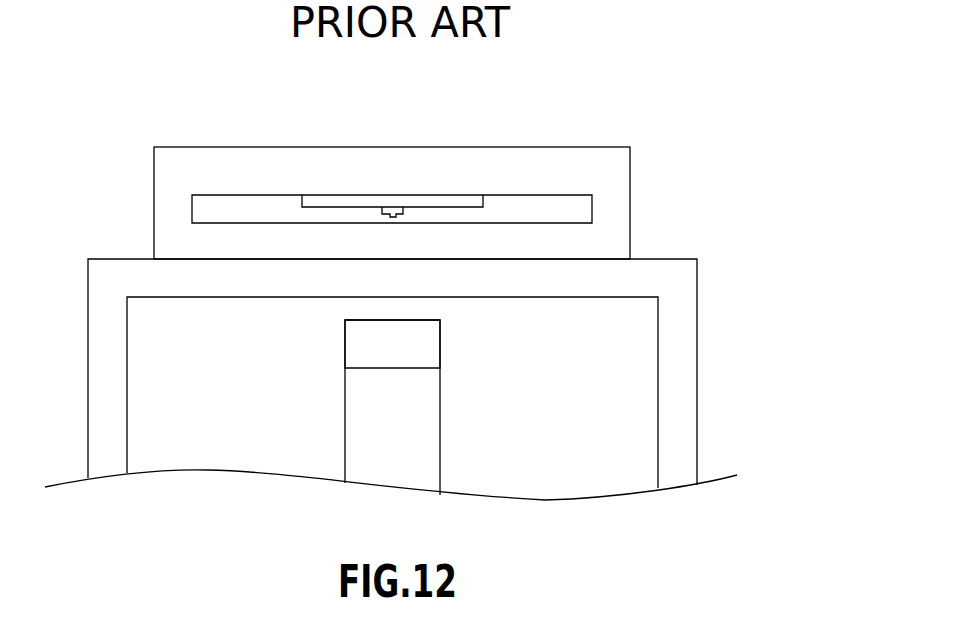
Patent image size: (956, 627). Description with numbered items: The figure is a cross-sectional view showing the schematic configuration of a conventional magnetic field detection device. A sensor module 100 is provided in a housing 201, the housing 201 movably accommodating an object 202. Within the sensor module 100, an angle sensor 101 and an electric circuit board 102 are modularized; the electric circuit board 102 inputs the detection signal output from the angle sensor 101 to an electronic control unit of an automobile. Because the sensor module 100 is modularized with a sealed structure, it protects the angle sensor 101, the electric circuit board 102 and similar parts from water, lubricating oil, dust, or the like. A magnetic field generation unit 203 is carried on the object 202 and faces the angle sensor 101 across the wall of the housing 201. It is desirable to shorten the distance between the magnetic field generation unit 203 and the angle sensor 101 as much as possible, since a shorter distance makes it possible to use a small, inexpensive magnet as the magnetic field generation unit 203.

The sensor module 100 is at (225, 147).
The angle sensor 101 is at (393, 222).
The electric circuit board 102 is at (333, 200).
The housing 201 is at (690, 372).
The object 202 is at (420, 423).
The magnetic field generation unit 203 is at (358, 345).